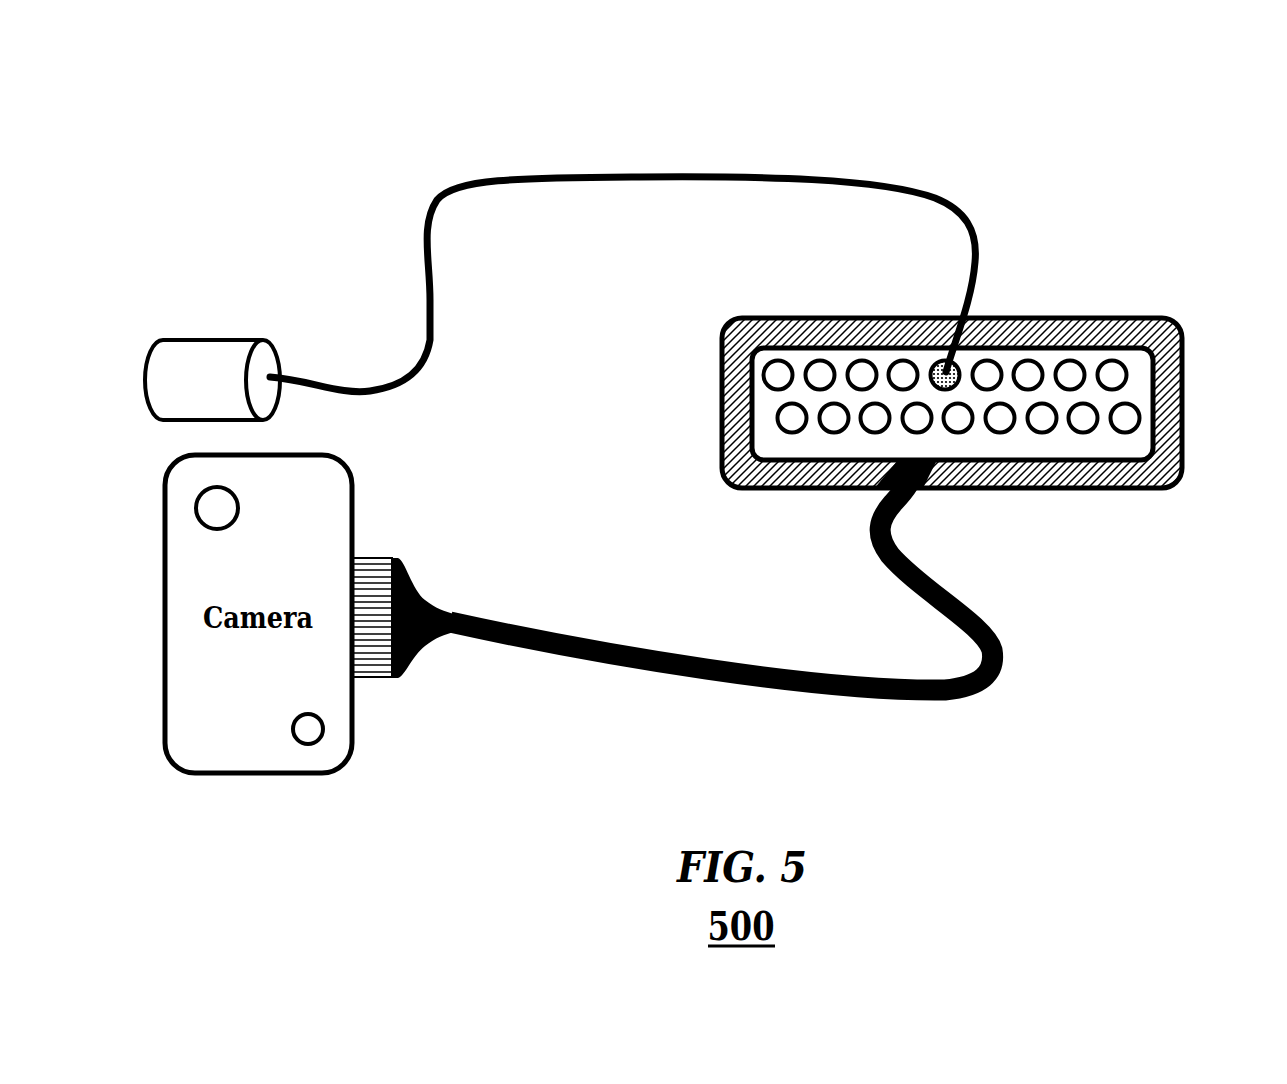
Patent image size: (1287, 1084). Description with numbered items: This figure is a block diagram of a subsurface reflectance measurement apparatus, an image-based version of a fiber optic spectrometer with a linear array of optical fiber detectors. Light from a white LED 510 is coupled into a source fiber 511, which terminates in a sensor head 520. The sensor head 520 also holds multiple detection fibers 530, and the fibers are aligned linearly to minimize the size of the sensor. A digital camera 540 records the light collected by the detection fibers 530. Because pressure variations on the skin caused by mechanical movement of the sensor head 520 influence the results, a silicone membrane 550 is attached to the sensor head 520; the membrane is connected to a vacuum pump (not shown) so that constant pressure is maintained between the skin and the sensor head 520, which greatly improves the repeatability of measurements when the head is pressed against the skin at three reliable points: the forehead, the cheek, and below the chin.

The white LED 510 is at (258, 340).
The source fiber 511 is at (681, 162).
The sensor head 520 is at (1053, 318).
The detection fibers 530 is at (1124, 433).
The digital camera 540 is at (352, 530).
The silicone membrane 550 is at (1187, 393).